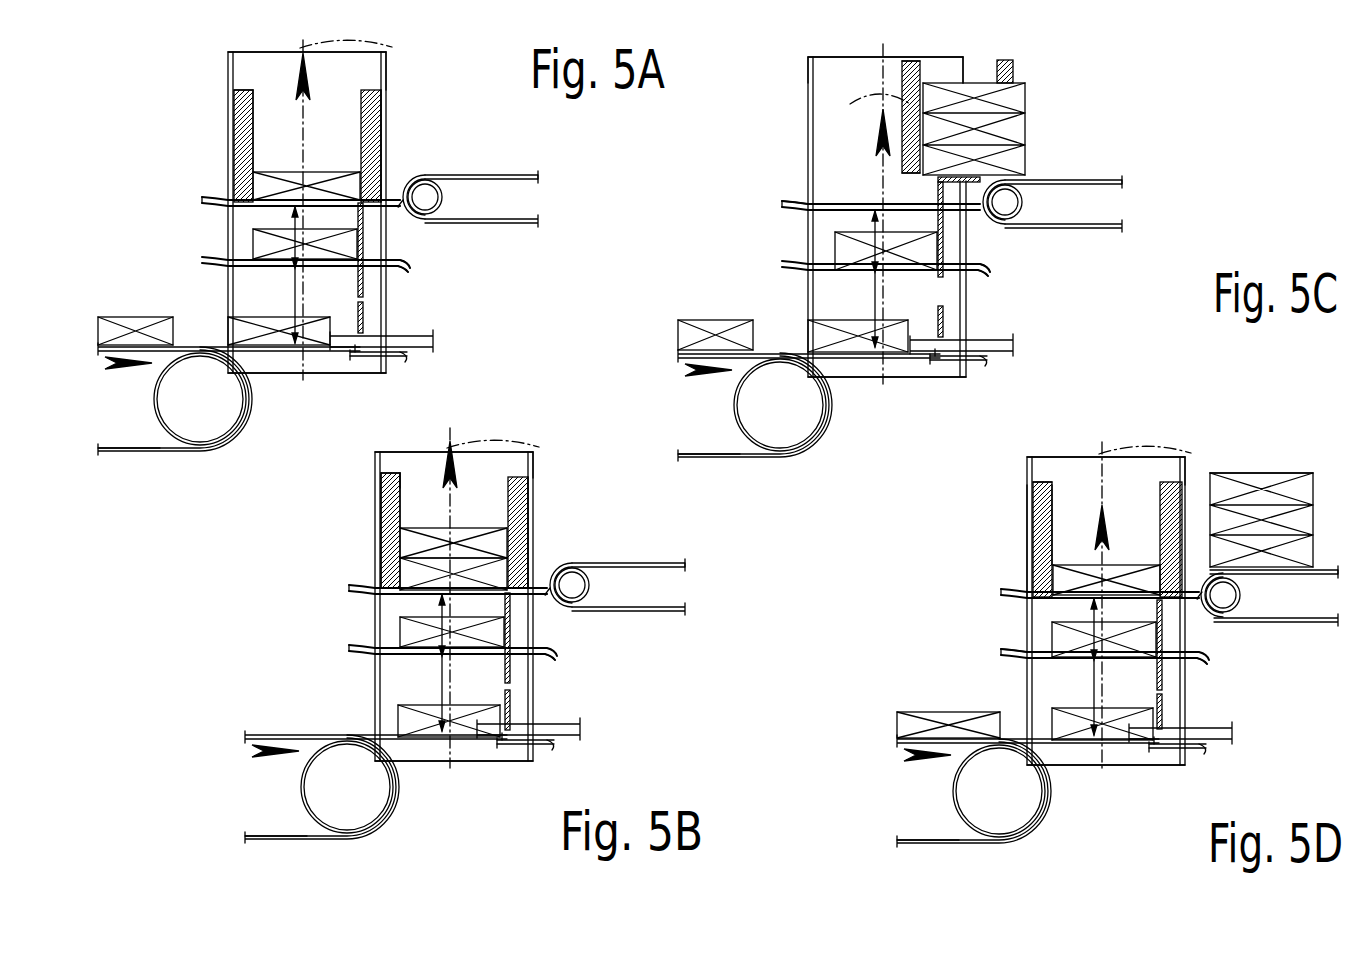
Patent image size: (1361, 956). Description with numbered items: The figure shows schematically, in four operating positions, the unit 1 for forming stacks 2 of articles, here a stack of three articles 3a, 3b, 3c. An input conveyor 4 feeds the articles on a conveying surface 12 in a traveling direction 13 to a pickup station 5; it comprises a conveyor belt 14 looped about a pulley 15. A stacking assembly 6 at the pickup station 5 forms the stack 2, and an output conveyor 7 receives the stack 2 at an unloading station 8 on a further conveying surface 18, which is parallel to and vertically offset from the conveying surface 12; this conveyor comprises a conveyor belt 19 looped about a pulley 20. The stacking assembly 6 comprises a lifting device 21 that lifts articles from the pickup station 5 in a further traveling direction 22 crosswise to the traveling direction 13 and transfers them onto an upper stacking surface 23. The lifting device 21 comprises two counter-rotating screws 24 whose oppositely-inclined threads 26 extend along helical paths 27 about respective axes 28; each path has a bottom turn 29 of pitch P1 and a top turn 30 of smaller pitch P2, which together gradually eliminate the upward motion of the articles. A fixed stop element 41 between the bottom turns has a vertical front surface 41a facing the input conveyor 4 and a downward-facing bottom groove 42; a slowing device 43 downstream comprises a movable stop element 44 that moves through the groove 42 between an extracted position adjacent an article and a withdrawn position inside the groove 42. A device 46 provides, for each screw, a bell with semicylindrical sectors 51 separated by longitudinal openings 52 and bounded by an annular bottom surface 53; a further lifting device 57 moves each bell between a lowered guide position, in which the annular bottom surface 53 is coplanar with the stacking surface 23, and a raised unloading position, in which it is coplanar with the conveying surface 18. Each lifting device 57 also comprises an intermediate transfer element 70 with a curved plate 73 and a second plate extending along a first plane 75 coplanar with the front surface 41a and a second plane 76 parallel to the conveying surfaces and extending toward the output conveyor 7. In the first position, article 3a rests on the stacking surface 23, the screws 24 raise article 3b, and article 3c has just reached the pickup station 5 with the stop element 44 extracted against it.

In FIG. 5A, the unit 1 is at (420, 100).
In FIG. 5B, the unit 1 is at (468, 416).
In FIG. 5C, the unit 1 is at (955, 68).
In FIG. 5D, the unit 1 is at (1146, 414).
In FIG. 5B, the stack 2 is at (469, 454).
In FIG. 5C, the stack 2 is at (1040, 67).
In FIG. 5D, the stack 2 is at (1261, 446).
In FIG. 5A, the article 3a is at (290, 170).
In FIG. 5B, the article 3a is at (488, 662).
In FIG. 5C, the article 3a is at (789, 227).
In FIG. 5D, the article 3a is at (1182, 497).
In FIG. 5A, the article 3b is at (255, 186).
In FIG. 5B, the article 3b is at (506, 557).
In FIG. 5C, the article 3b is at (951, 253).
In FIG. 5D, the article 3b is at (1117, 536).
In FIG. 5A, the article 3c is at (280, 350).
In FIG. 5B, the article 3c is at (406, 705).
In FIG. 5C, the article 3c is at (918, 239).
In FIG. 5D, the article 3c is at (1200, 631).
In FIG. 5A, the input conveyor 4 is at (170, 453).
In FIG. 5B, the input conveyor 4 is at (276, 852).
In FIG. 5C, the input conveyor 4 is at (709, 480).
In FIG. 5D, the input conveyor 4 is at (903, 855).
In FIG. 5A, the pickup station 5 is at (215, 325).
In FIG. 5B, the pickup station 5 is at (411, 606).
In FIG. 5C, the pickup station 5 is at (846, 217).
In FIG. 5D, the pickup station 5 is at (1082, 611).
In FIG. 5A, the stacking assembly 6 is at (395, 95).
In FIG. 5B, the stacking assembly 6 is at (515, 439).
In FIG. 5C, the stacking assembly 6 is at (807, 61).
In FIG. 5D, the stacking assembly 6 is at (1177, 428).
In FIG. 5A, the output conveyor 7 is at (512, 172).
In FIG. 5B, the output conveyor 7 is at (672, 541).
In FIG. 5C, the output conveyor 7 is at (1168, 160).
In FIG. 5D, the output conveyor 7 is at (1325, 625).
In FIG. 5A, the unloading station 8 is at (410, 162).
In FIG. 5B, the unloading station 8 is at (592, 551).
In FIG. 5C, the unloading station 8 is at (1085, 175).
In FIG. 5D, the unloading station 8 is at (1250, 614).
In FIG. 5A, the conveying surface 12 is at (130, 320).
In FIG. 5B, the conveying surface 12 is at (376, 703).
In FIG. 5C, the conveying surface 12 is at (789, 325).
In FIG. 5D, the conveying surface 12 is at (1028, 711).
In FIG. 5A, the traveling direction 13 is at (144, 375).
In FIG. 5B, the traveling direction 13 is at (275, 773).
In FIG. 5C, the traveling direction 13 is at (707, 387).
In FIG. 5D, the traveling direction 13 is at (925, 776).
In FIG. 5A, the conveyor belt 14 is at (185, 455).
In FIG. 5B, the conveyor belt 14 is at (322, 800).
In FIG. 5C, the conveyor belt 14 is at (755, 427).
In FIG. 5D, the conveyor belt 14 is at (974, 793).
In FIG. 5A, the pulley 15 is at (240, 420).
In FIG. 5B, the pulley 15 is at (363, 793).
In FIG. 5C, the pulley 15 is at (780, 422).
In FIG. 5D, the pulley 15 is at (1016, 794).
In FIG. 5A, the conveying surface 18 is at (495, 172).
In FIG. 5B, the conveying surface 18 is at (628, 538).
In FIG. 5C, the conveying surface 18 is at (1063, 182).
In FIG. 5D, the conveying surface 18 is at (1285, 542).
In FIG. 5A, the conveyor belt 19 is at (513, 225).
In FIG. 5B, the conveyor belt 19 is at (628, 631).
In FIG. 5C, the conveyor belt 19 is at (1063, 240).
In FIG. 5D, the conveyor belt 19 is at (1287, 636).
In FIG. 5A, the pulley 20 is at (430, 205).
In FIG. 5B, the pulley 20 is at (598, 609).
In FIG. 5C, the pulley 20 is at (1036, 203).
In FIG. 5D, the pulley 20 is at (1246, 595).
In FIG. 5A, the lifting device 21 is at (440, 340).
In FIG. 5B, the lifting device 21 is at (569, 715).
In FIG. 5C, the lifting device 21 is at (983, 340).
In FIG. 5D, the lifting device 21 is at (1221, 737).
In FIG. 5A, the traveling direction 22 is at (310, 72).
In FIG. 5B, the traveling direction 22 is at (465, 474).
In FIG. 5C, the traveling direction 22 is at (863, 132).
In FIG. 5D, the traveling direction 22 is at (1122, 521).
In FIG. 5A, the upper stacking surface 23 is at (265, 180).
In FIG. 5B, the upper stacking surface 23 is at (371, 523).
In FIG. 5C, the upper stacking surface 23 is at (867, 180).
In FIG. 5D, the upper stacking surface 23 is at (1074, 531).
In FIG. 5A, the screw 24 is at (225, 210).
In FIG. 5B, the screw 24 is at (410, 602).
In FIG. 5C, the screw 24 is at (848, 213).
In FIG. 5D, the screw 24 is at (1065, 593).
In FIG. 5A, the thread 26 is at (412, 272).
In FIG. 5B, the thread 26 is at (593, 672).
In FIG. 5C, the thread 26 is at (1020, 294).
In FIG. 5D, the thread 26 is at (984, 662).
In FIG. 5A, the helical path 27 is at (222, 262).
In FIG. 5B, the helical path 27 is at (477, 659).
In FIG. 5C, the helical path 27 is at (856, 259).
In FIG. 5D, the helical path 27 is at (1133, 664).
In FIG. 5A, the axis 28 is at (380, 50).
In FIG. 5B, the axis 28 is at (478, 466).
In FIG. 5C, the axis 28 is at (869, 92).
In FIG. 5D, the axis 28 is at (1144, 418).
In FIG. 5A, the bottom turn 29 is at (325, 370).
In FIG. 5B, the bottom turn 29 is at (437, 723).
In FIG. 5C, the bottom turn 29 is at (887, 416).
In FIG. 5D, the bottom turn 29 is at (1106, 800).
In FIG. 5A, the top turn 30 is at (318, 200).
In FIG. 5B, the top turn 30 is at (437, 617).
In FIG. 5C, the top turn 30 is at (825, 252).
In FIG. 5D, the top turn 30 is at (1044, 625).
In FIG. 5A, the fixed stop element 41 is at (365, 315).
In FIG. 5B, the fixed stop element 41 is at (549, 709).
In FIG. 5C, the fixed stop element 41 is at (968, 319).
In FIG. 5D, the fixed stop element 41 is at (1190, 711).
In FIG. 5A, the vertical front surface 41a is at (352, 345).
In FIG. 5B, the vertical front surface 41a is at (496, 782).
In FIG. 5C, the vertical front surface 41a is at (920, 387).
In FIG. 5D, the vertical front surface 41a is at (1141, 789).
In FIG. 5A, the bottom groove 42 is at (355, 355).
In FIG. 5B, the bottom groove 42 is at (506, 769).
In FIG. 5C, the bottom groove 42 is at (947, 399).
In FIG. 5D, the bottom groove 42 is at (1146, 776).
In FIG. 5A, the slowing device 43 is at (415, 360).
In FIG. 5B, the slowing device 43 is at (576, 754).
In FIG. 5C, the slowing device 43 is at (985, 382).
In FIG. 5D, the slowing device 43 is at (1202, 775).
In FIG. 5A, the stop element 44 is at (398, 360).
In FIG. 5B, the stop element 44 is at (566, 767).
In FIG. 5C, the stop element 44 is at (972, 387).
In FIG. 5D, the stop element 44 is at (1185, 787).
In FIG. 5A, the device 46 is at (392, 128).
In FIG. 5B, the device 46 is at (556, 521).
In FIG. 5C, the device 46 is at (1044, 98).
In FIG. 5D, the device 46 is at (998, 541).
In FIG. 5A, the sector 51 is at (238, 110).
In FIG. 5B, the sector 51 is at (461, 524).
In FIG. 5C, the sector 51 is at (961, 117).
In FIG. 5D, the sector 51 is at (1086, 509).
In FIG. 5A, the longitudinal opening 52 is at (250, 88).
In FIG. 5B, the longitudinal opening 52 is at (389, 455).
In FIG. 5C, the longitudinal opening 52 is at (844, 83).
In FIG. 5D, the longitudinal opening 52 is at (1062, 448).
In FIG. 5A, the annular bottom surface 53 is at (228, 202).
In FIG. 5B, the annular bottom surface 53 is at (340, 590).
In FIG. 5C, the annular bottom surface 53 is at (837, 182).
In FIG. 5D, the annular bottom surface 53 is at (1003, 569).
In FIG. 5A, the lifting device 57 is at (410, 185).
In FIG. 5B, the lifting device 57 is at (364, 530).
In FIG. 5C, the lifting device 57 is at (777, 194).
In FIG. 5D, the lifting device 57 is at (983, 631).
In FIG. 5A, the intermediate transfer element 70 is at (408, 262).
In FIG. 5B, the intermediate transfer element 70 is at (336, 657).
In FIG. 5C, the intermediate transfer element 70 is at (1030, 271).
In FIG. 5D, the intermediate transfer element 70 is at (1206, 681).
In FIG. 5A, the plate 73 is at (360, 205).
In FIG. 5B, the plate 73 is at (488, 643).
In FIG. 5C, the plate 73 is at (993, 240).
In FIG. 5D, the plate 73 is at (1193, 645).
In FIG. 5C, the first plane 75 is at (997, 219).
In FIG. 5A, the second plane 76 is at (390, 215).
In FIG. 5B, the second plane 76 is at (570, 617).
In FIG. 5D, the second plane 76 is at (1231, 622).
In FIG. 5A, the pitch P1 is at (308, 298).
In FIG. 5B, the pitch P1 is at (461, 609).
In FIG. 5C, the pitch P1 is at (903, 214).
In FIG. 5D, the pitch P1 is at (1123, 607).
In FIG. 5A, the pitch P2 is at (305, 268).
In FIG. 5B, the pitch P2 is at (445, 652).
In FIG. 5C, the pitch P2 is at (886, 273).
In FIG. 5D, the pitch P2 is at (1100, 661).